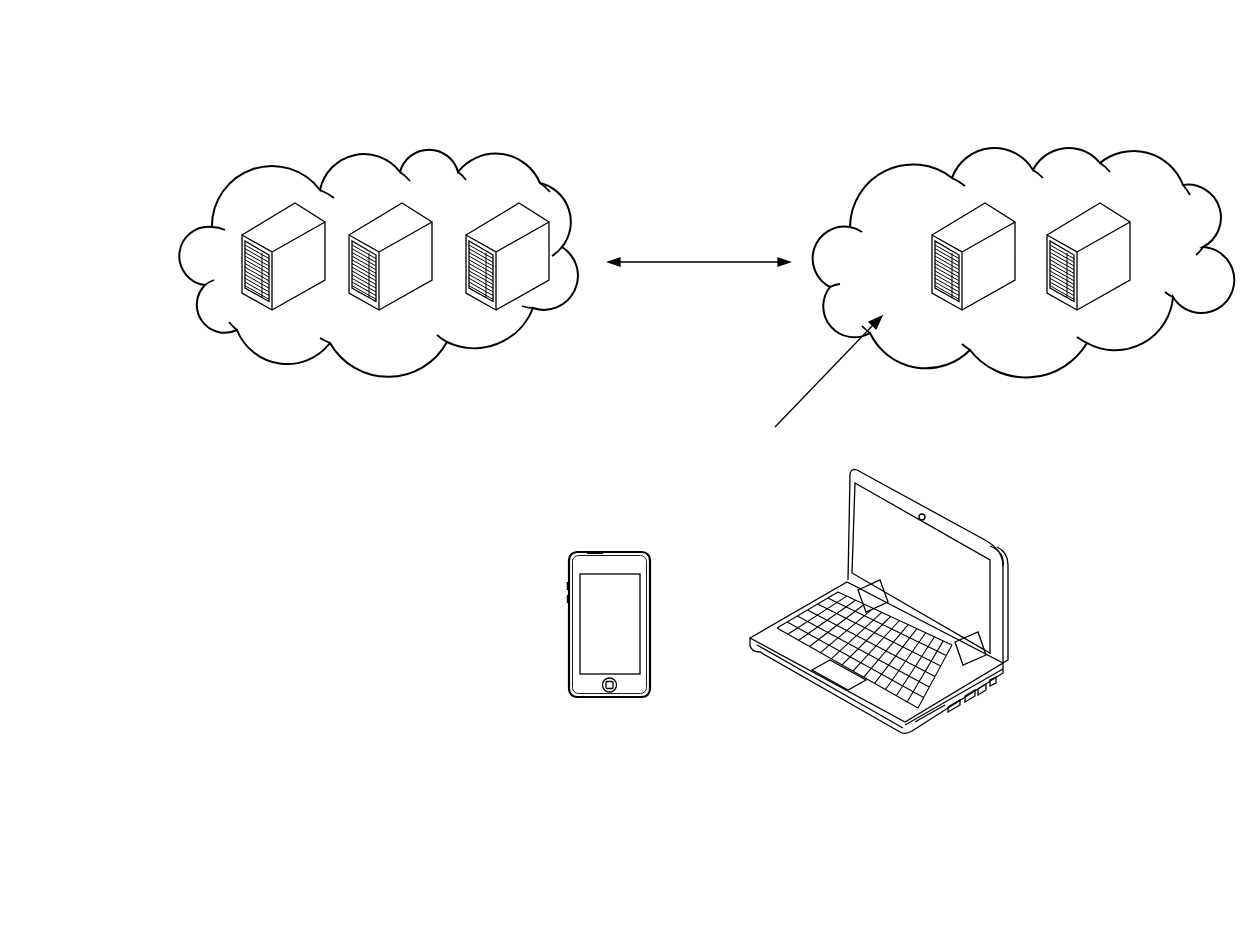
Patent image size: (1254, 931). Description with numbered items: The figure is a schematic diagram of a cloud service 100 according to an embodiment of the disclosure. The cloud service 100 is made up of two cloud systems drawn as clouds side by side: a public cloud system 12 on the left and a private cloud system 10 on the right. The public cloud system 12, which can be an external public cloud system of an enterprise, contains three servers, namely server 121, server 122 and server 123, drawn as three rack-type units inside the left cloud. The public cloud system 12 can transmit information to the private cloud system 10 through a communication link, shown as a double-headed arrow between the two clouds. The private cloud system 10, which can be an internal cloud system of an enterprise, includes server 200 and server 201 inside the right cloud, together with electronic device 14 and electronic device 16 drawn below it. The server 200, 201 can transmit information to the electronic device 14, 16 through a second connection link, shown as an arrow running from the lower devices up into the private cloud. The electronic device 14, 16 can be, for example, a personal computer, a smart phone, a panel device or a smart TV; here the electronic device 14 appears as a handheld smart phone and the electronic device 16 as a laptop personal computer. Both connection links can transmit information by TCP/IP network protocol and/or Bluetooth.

The cloud service 100 is at (158, 80).
The public cloud system 12 is at (570, 192).
The server 121 is at (278, 227).
The server 122 is at (390, 226).
The server 123 is at (508, 223).
The private cloud system 10 is at (875, 205).
The server 200 is at (973, 225).
The server 201 is at (1088, 225).
The electronic device 14 is at (605, 551).
The electronic device 16 is at (921, 513).